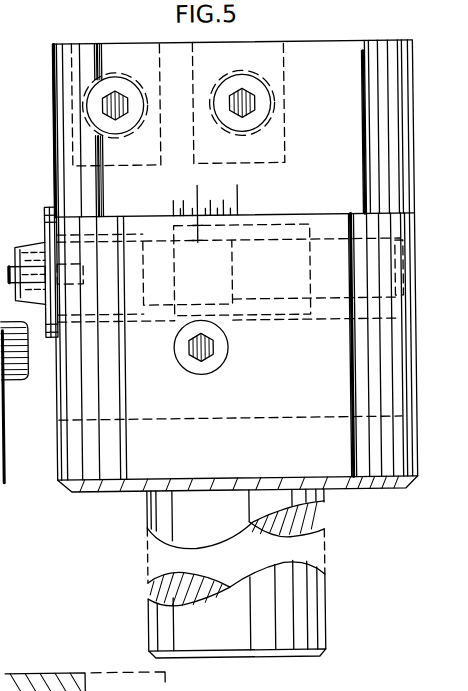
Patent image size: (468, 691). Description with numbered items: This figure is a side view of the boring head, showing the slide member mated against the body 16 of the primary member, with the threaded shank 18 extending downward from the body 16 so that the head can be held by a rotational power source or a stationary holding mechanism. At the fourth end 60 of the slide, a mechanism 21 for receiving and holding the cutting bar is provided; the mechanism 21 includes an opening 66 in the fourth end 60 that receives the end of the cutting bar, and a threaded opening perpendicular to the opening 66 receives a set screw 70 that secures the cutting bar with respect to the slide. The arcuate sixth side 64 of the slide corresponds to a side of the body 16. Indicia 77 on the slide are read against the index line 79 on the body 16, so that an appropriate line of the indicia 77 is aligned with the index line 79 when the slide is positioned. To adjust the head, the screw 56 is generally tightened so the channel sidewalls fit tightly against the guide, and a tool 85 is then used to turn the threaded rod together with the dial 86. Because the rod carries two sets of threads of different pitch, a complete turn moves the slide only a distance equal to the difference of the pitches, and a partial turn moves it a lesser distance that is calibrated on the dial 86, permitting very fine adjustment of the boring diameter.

The body 16 is at (319, 462).
The shank 18 is at (323, 633).
The mechanism for holding a cutting bar 21 is at (25, 671).
The screw 56 is at (210, 355).
The fourth end 60 is at (366, 42).
The sixth side 64 is at (51, 71).
The opening 66 is at (127, 58).
The set screw 70 is at (128, 123).
The indicia 77 is at (241, 203).
The index line 79 is at (199, 243).
The tool 85 is at (24, 256).
The dial 86 is at (50, 205).